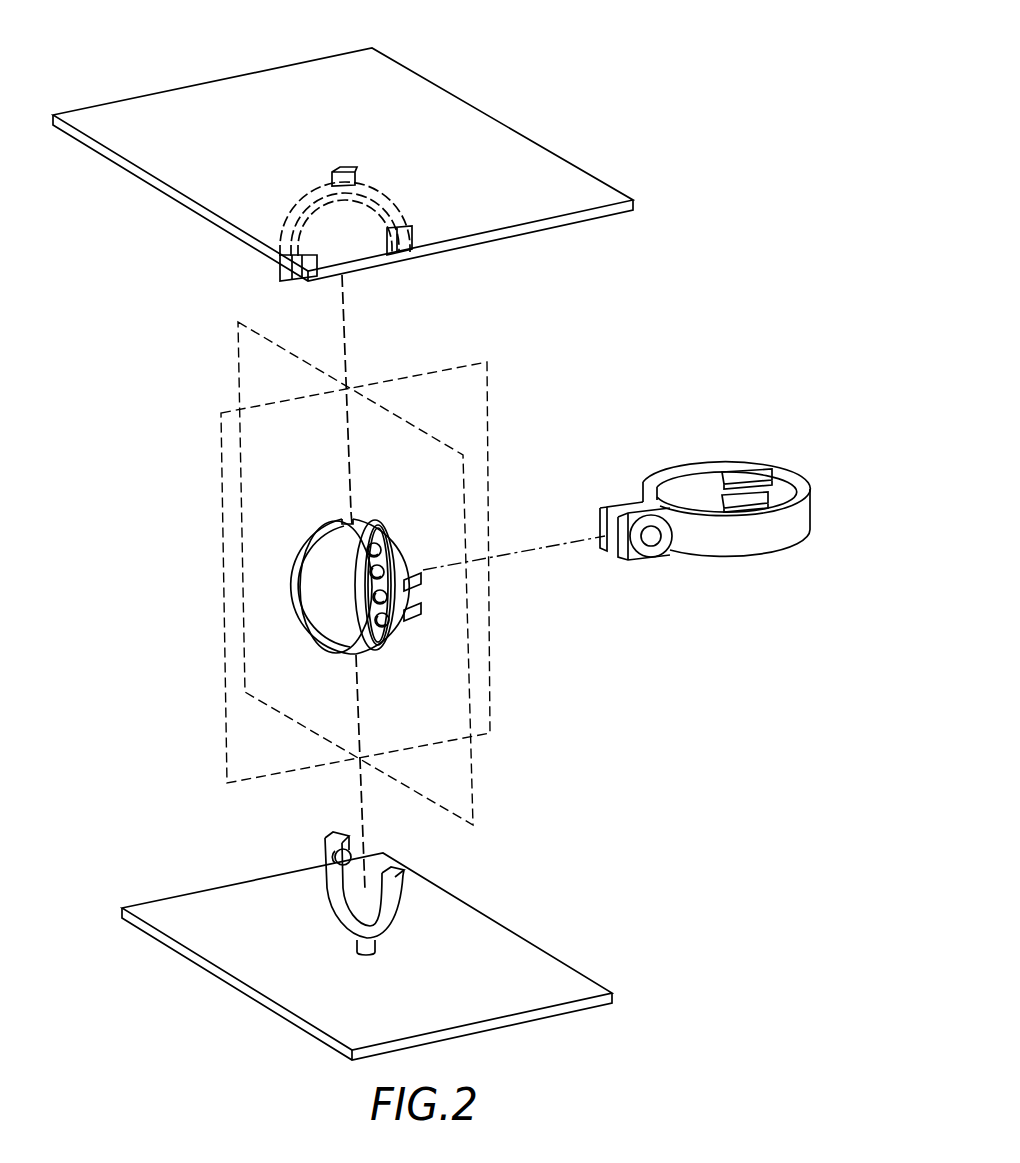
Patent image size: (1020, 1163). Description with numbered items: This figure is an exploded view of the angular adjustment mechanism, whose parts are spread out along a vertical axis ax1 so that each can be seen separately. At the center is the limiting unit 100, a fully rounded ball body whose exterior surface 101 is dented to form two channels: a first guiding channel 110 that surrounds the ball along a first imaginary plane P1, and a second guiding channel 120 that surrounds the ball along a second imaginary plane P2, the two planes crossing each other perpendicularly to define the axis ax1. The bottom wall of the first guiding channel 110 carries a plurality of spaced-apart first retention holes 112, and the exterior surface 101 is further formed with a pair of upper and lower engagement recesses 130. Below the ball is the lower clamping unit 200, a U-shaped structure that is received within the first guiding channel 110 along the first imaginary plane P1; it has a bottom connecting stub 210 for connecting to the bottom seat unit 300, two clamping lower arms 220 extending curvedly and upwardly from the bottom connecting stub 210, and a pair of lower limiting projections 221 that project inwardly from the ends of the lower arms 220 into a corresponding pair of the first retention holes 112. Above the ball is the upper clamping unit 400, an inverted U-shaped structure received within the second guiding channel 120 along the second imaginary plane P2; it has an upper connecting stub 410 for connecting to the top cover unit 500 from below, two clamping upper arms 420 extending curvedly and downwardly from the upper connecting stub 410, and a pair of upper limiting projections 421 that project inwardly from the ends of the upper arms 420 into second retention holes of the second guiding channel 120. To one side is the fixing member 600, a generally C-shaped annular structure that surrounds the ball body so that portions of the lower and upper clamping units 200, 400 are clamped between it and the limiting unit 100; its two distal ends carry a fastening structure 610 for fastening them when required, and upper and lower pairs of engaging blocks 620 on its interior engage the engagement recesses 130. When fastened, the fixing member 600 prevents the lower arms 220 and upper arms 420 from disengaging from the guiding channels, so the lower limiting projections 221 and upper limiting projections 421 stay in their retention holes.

The top cover unit 500 is at (240, 88).
The upper clamping unit 400 is at (311, 212).
The upper connecting stub 410 is at (336, 155).
The clamping upper arms 420 is at (391, 198).
The upper limiting projections 421 is at (310, 285).
The axis ax1 is at (348, 334).
The first imaginary plane P1 is at (240, 460).
The second imaginary plane P2 is at (240, 598).
The limiting unit 100 is at (357, 557).
The exterior surface 101 is at (330, 633).
The first guiding channel 110 is at (401, 585).
The first retention holes 112 is at (392, 622).
The second guiding channel 120 is at (313, 590).
The engagement recesses 130 is at (426, 575).
The fixing member 600 is at (728, 499).
The fastening structure 610 is at (648, 553).
The engaging blocks 620 is at (741, 472).
The lower clamping unit 200 is at (372, 917).
The bottom connecting stub 210 is at (357, 947).
The clamping lower arms 220 is at (348, 903).
The lower limiting projections 221 is at (327, 860).
The bottom seat unit 300 is at (612, 996).